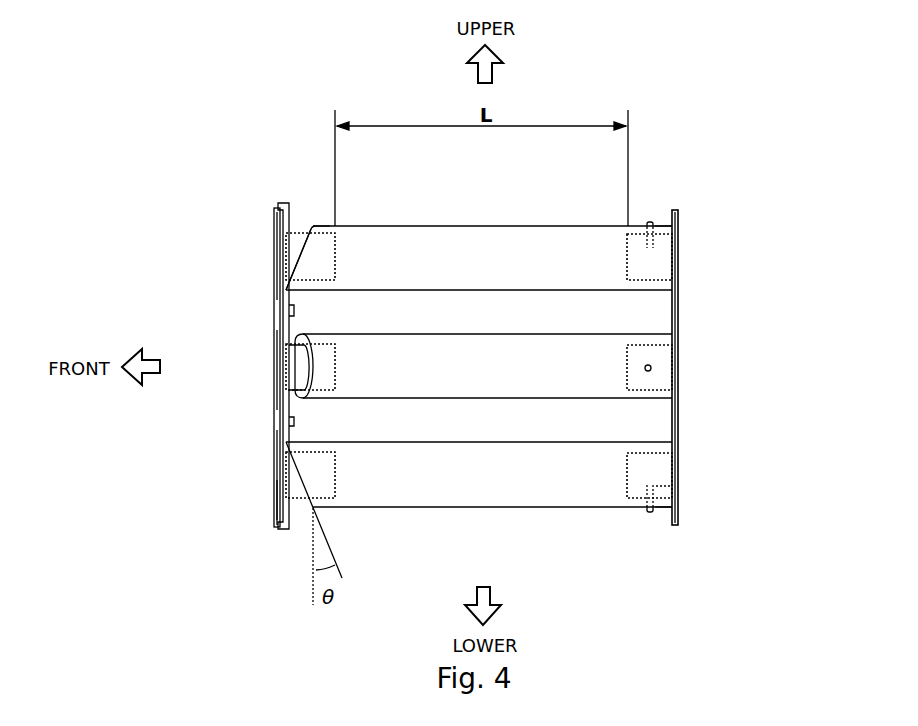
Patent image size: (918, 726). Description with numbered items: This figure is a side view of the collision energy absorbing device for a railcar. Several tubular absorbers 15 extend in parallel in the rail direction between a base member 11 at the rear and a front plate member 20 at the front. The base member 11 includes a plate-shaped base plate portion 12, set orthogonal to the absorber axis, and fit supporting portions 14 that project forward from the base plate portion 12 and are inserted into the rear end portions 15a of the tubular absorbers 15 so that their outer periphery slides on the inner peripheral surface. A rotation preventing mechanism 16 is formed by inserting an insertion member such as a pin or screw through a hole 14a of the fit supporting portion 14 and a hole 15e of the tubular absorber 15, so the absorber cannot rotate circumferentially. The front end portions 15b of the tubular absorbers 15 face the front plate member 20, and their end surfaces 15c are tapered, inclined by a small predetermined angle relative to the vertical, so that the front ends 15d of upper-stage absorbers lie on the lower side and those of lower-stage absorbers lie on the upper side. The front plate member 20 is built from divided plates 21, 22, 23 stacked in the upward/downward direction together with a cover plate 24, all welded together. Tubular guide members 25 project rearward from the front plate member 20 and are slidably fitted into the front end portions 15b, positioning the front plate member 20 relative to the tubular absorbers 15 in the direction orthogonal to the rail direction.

The base member 11 is at (678, 228).
The base plate portion 12 is at (679, 260).
The fit supporting portion 14 is at (627, 258).
The hole of the fit supporting portion 14a is at (660, 487).
The tubular absorber 15 is at (478, 225).
The rear end portion 15a is at (662, 226).
The front end portion 15b is at (325, 224).
The end surface 15c is at (300, 246).
The front end 15d is at (287, 302).
The hole of the tubular absorber 15e is at (665, 509).
The rotation preventing mechanism 16 is at (650, 221).
The front plate member 20 is at (273, 228).
The divided plate 21 is at (282, 258).
The divided plate 22 is at (282, 370).
The divided plate 23 is at (282, 473).
The cover plate 24 is at (274, 492).
The guide member 25 is at (337, 260).